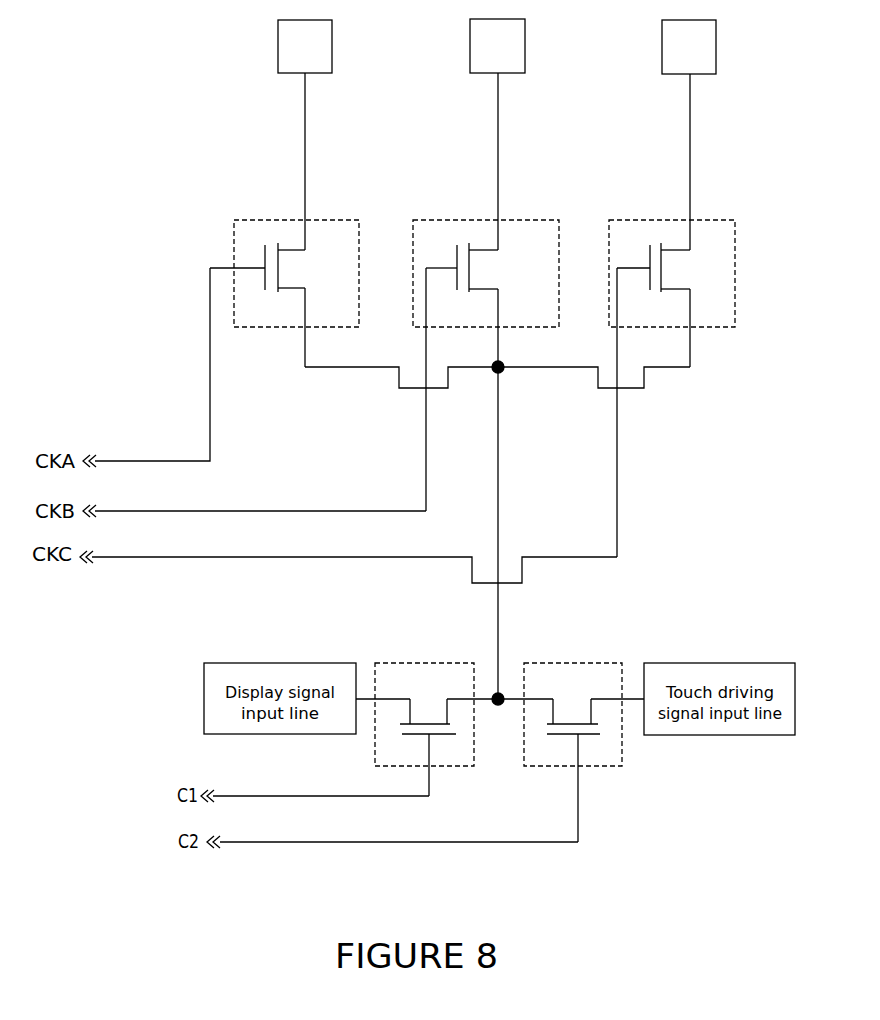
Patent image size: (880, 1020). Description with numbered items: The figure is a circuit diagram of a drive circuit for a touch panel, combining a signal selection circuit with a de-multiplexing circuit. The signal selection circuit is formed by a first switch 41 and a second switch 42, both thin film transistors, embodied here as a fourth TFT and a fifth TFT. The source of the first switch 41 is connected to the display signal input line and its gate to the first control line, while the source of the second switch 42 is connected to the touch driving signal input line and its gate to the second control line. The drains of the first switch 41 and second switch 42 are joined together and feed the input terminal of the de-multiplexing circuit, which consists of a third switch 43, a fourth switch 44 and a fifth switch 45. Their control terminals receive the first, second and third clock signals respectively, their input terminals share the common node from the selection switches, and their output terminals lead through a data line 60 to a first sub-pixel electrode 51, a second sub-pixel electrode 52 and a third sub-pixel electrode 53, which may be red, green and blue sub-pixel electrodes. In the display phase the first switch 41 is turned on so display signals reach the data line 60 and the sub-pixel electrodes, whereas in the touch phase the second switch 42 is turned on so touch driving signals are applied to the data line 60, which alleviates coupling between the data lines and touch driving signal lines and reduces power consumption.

The first switch 41 is at (425, 663).
The second switch 42 is at (572, 663).
The third switch 43 is at (313, 220).
The fourth switch 44 is at (512, 220).
The fifth switch 45 is at (697, 220).
The first sub-pixel electrode 51 is at (332, 44).
The second sub-pixel electrode 52 is at (525, 44).
The third sub-pixel electrode 53 is at (716, 44).
The data line 60 is at (318, 126).